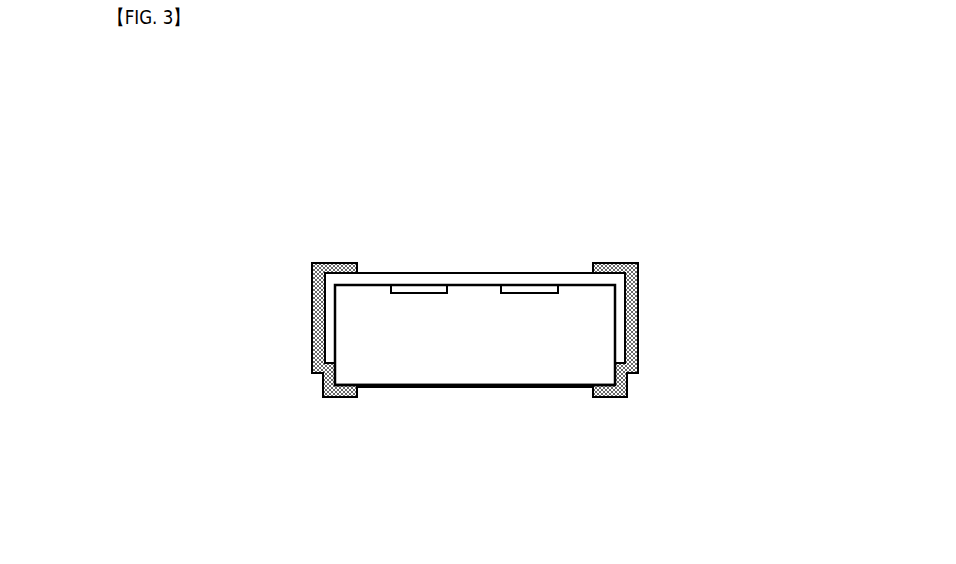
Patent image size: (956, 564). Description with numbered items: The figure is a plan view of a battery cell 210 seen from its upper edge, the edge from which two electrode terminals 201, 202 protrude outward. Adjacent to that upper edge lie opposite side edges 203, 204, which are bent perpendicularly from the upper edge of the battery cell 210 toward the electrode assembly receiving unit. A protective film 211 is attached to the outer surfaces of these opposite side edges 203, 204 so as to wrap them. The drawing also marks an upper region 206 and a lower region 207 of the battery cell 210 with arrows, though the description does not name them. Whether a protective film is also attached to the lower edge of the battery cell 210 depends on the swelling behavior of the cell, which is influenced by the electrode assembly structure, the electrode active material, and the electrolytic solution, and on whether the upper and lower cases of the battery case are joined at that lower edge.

The battery cell 210 is at (202, 110).
The electrode terminal 201 is at (427, 287).
The electrode terminal 202 is at (523, 284).
The side edge 203 is at (328, 330).
The side edge 204 is at (615, 338).
The upper cover layer 206 is at (500, 230).
The lower cover layer 207 is at (517, 405).
The protective film 211 is at (637, 313).